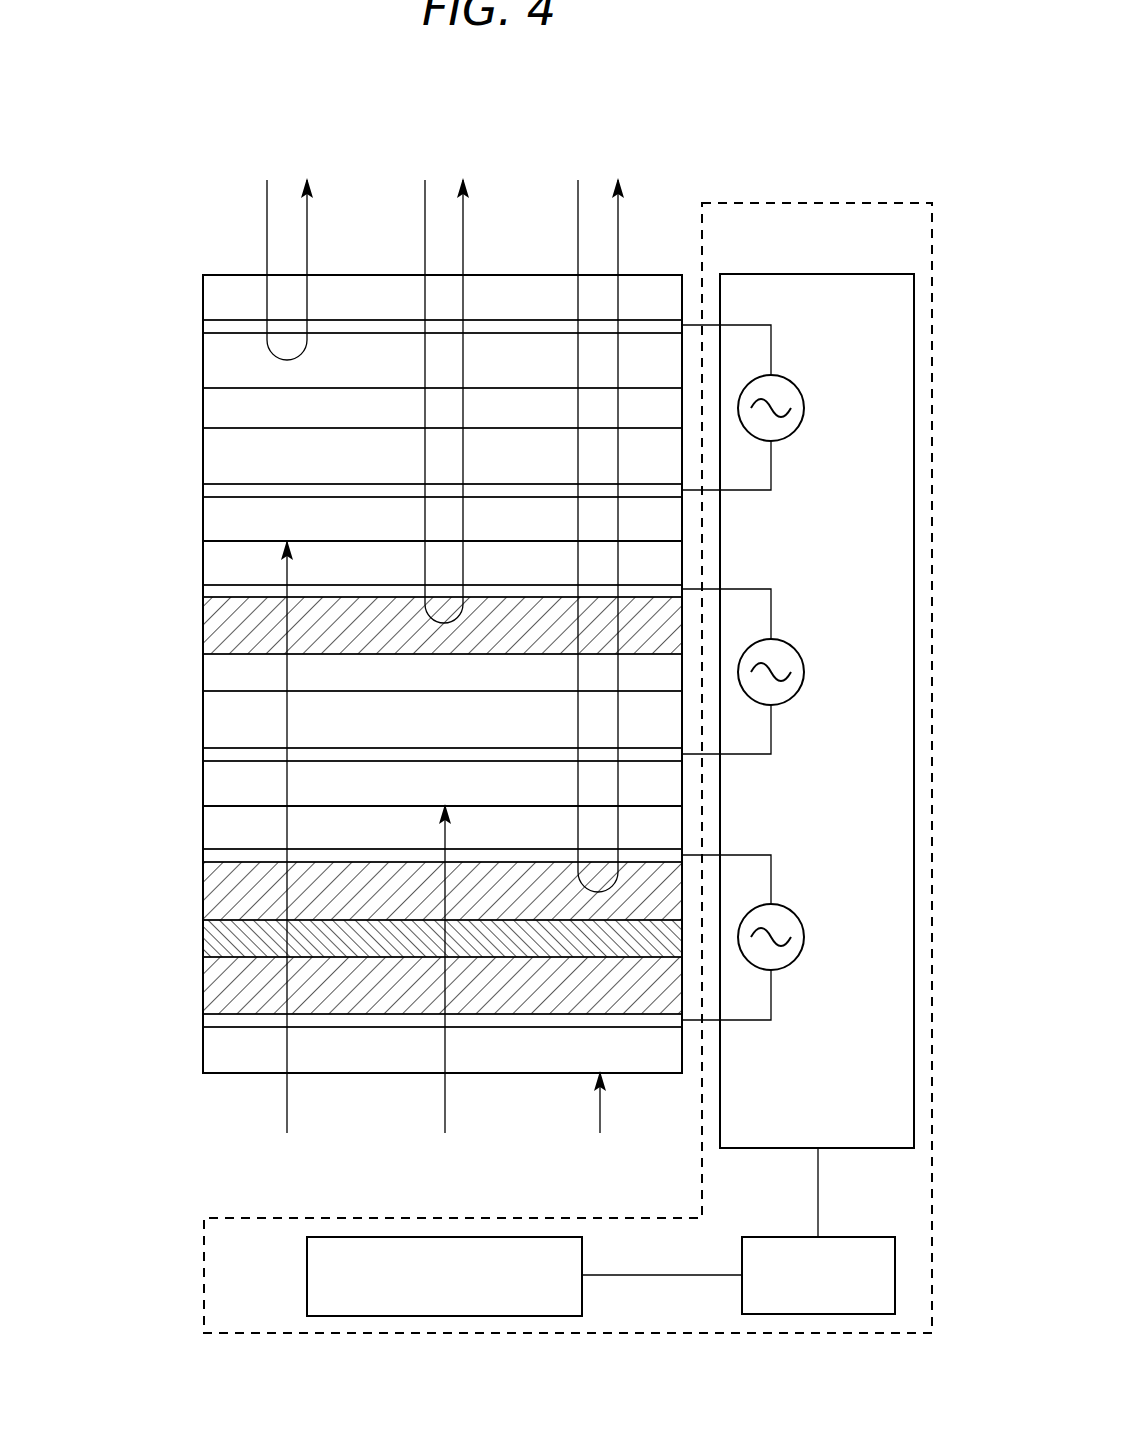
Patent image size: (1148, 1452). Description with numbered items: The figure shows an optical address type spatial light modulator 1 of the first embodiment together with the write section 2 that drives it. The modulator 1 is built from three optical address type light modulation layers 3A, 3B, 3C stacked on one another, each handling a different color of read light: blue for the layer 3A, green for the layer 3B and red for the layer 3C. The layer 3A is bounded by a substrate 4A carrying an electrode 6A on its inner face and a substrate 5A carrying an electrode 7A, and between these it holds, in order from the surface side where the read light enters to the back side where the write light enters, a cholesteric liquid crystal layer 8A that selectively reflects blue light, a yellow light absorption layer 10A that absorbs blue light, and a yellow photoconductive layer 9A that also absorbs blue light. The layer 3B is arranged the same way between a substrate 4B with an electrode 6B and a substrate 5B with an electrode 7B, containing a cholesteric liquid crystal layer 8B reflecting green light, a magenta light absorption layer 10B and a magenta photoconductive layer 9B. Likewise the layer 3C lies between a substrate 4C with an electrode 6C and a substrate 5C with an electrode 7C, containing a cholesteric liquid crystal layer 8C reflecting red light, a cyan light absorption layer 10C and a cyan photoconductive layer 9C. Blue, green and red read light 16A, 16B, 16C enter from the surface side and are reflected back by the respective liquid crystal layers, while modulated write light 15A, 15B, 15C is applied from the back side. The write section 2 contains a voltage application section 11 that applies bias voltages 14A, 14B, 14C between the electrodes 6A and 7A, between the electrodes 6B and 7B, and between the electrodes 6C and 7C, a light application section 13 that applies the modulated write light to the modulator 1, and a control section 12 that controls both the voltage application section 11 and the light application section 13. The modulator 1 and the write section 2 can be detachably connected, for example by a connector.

The optical address type spatial light modulator 1 is at (206, 258).
The write section 2 is at (823, 197).
The optical address type light modulation layer 3A is at (113, 287).
The optical address type light modulation layer 3B is at (113, 553).
The optical address type light modulation layer 3C is at (113, 817).
The substrate 4A is at (202, 302).
The substrate 5A is at (202, 520).
The electrode 6A is at (202, 328).
The electrode 7A is at (202, 492).
The cholesteric liquid crystal layer 8A is at (202, 363).
The Y photoconductive layer 9A is at (202, 458).
The Y light absorption layer 10A is at (202, 412).
The substrate 4B is at (202, 567).
The substrate 5B is at (202, 783).
The electrode 6B is at (202, 597).
The electrode 7B is at (202, 755).
The cholesteric liquid crystal layer 8B is at (202, 628).
The M photoconductive layer 9B is at (202, 722).
The M light absorption layer 10B is at (202, 673).
The substrate 4C is at (202, 832).
The substrate 5C is at (202, 1050).
The electrode 6C is at (202, 858).
The electrode 7C is at (202, 1022).
The cholesteric liquid crystal layer 8C is at (202, 893).
The C photoconductive layer 9C is at (202, 988).
The C light absorption layer 10C is at (202, 942).
The voltage application section 11 is at (816, 274).
The control section 12 is at (852, 1237).
The light application section 13 is at (307, 1277).
The bias voltage 14A is at (806, 408).
The bias voltage 14B is at (806, 672).
The bias voltage 14C is at (806, 937).
The write light 15A is at (289, 861).
The write light 15B is at (445, 993).
The write light 15C is at (599, 1126).
The read light 16A is at (288, 232).
The read light 16B is at (443, 364).
The read light 16C is at (597, 498).